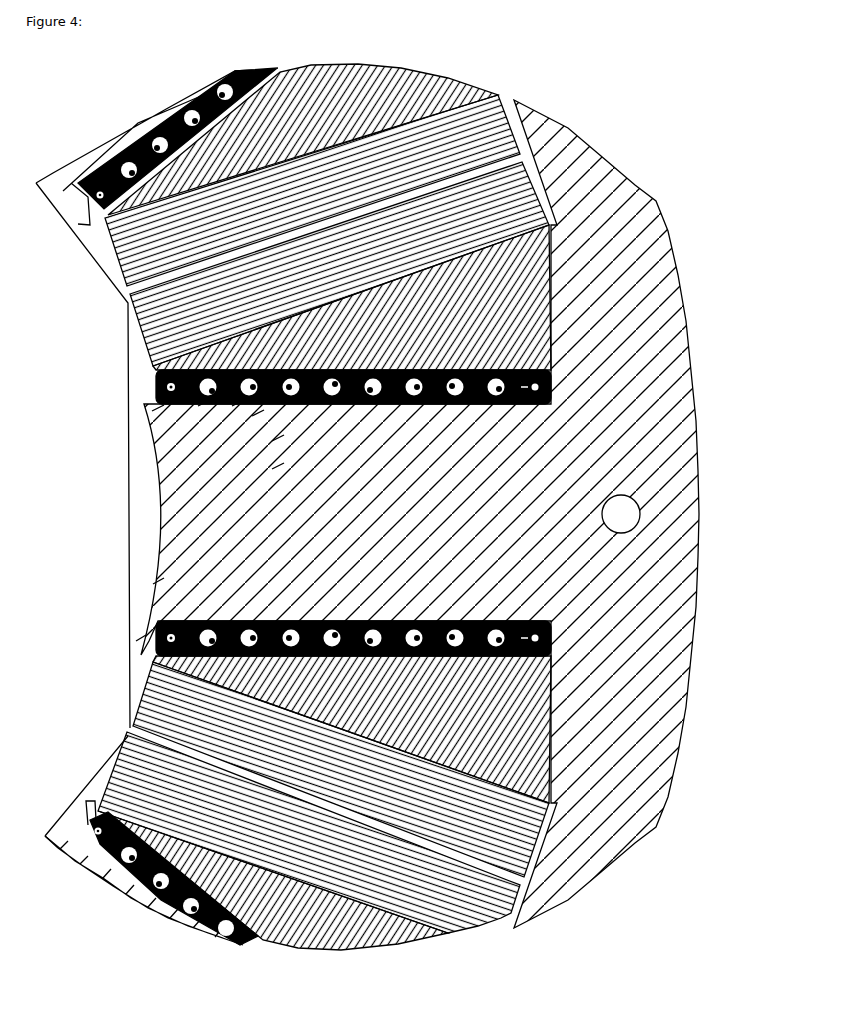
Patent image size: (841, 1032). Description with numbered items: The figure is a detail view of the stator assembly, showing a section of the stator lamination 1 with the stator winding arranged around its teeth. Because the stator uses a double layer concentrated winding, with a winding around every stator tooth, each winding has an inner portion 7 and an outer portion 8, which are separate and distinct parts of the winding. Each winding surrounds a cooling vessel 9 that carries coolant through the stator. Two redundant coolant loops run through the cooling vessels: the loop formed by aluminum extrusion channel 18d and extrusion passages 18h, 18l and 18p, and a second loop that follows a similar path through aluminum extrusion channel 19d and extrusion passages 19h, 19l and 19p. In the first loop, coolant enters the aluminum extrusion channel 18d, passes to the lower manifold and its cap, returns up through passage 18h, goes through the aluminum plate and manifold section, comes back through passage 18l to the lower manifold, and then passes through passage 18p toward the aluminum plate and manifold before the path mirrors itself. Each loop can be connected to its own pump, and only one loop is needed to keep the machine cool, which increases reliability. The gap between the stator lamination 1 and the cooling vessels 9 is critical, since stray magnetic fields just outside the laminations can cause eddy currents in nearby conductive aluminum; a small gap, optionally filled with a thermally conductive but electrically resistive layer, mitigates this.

The stator lamination 1 is at (598, 218).
The inner portion of stator winding 7 is at (470, 710).
The outer portion of stator winding 8 is at (441, 803).
The cooling vessel 9 is at (543, 624).
The passage in aluminum extrusion 18p is at (150, 400).
The passage in aluminum extrusion 19p is at (196, 395).
The passage in aluminum extrusion 19l is at (230, 394).
The passage in aluminum extrusion 18l is at (250, 405).
The passage in aluminum extrusion 18h is at (270, 430).
The passage in aluminum extrusion 19h is at (270, 458).
The aluminum extrusion channel 19d is at (150, 572).
The aluminum extrusion channel 18d is at (133, 630).